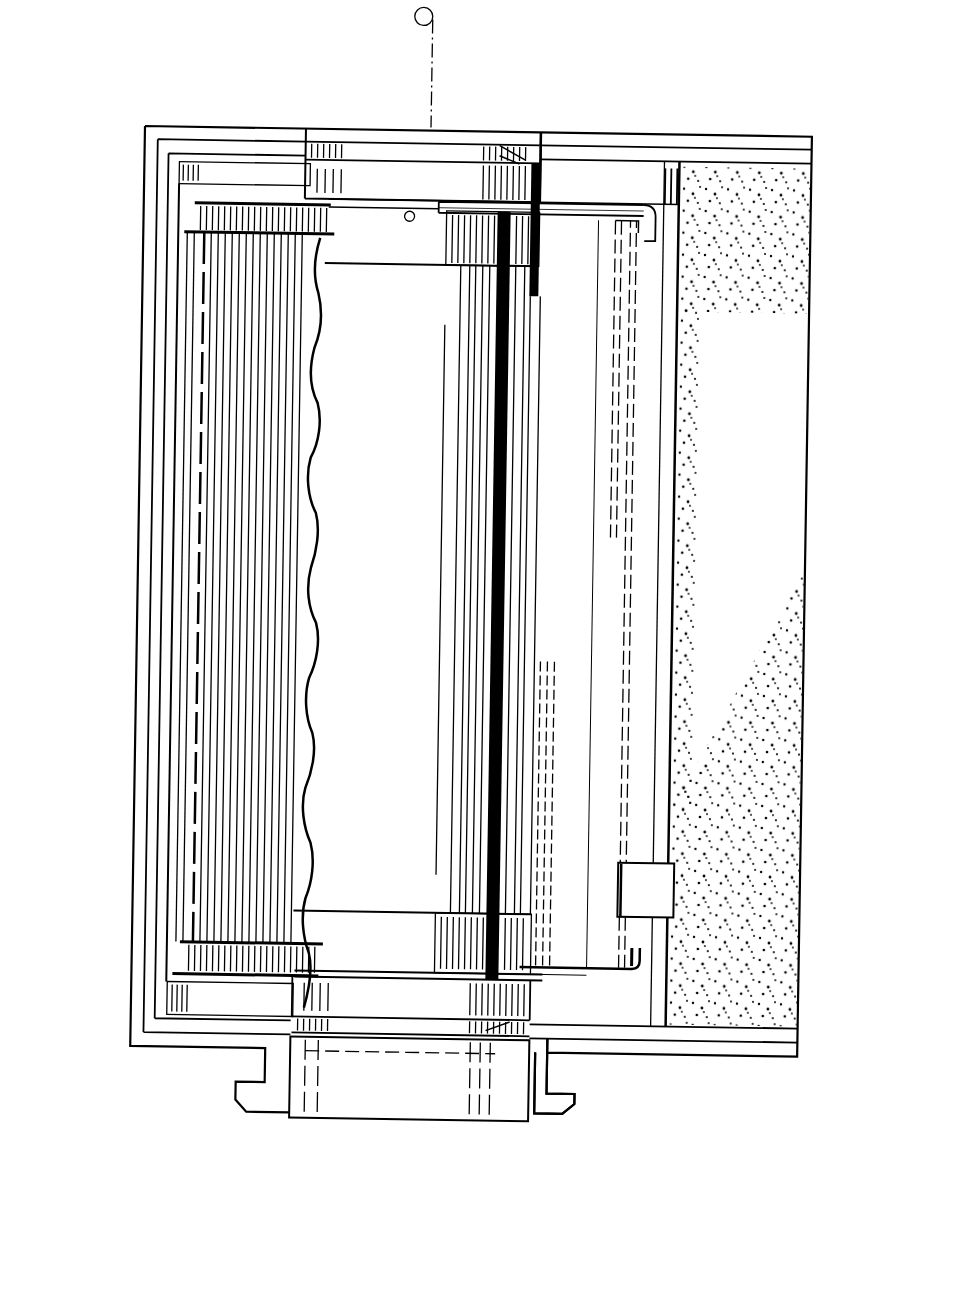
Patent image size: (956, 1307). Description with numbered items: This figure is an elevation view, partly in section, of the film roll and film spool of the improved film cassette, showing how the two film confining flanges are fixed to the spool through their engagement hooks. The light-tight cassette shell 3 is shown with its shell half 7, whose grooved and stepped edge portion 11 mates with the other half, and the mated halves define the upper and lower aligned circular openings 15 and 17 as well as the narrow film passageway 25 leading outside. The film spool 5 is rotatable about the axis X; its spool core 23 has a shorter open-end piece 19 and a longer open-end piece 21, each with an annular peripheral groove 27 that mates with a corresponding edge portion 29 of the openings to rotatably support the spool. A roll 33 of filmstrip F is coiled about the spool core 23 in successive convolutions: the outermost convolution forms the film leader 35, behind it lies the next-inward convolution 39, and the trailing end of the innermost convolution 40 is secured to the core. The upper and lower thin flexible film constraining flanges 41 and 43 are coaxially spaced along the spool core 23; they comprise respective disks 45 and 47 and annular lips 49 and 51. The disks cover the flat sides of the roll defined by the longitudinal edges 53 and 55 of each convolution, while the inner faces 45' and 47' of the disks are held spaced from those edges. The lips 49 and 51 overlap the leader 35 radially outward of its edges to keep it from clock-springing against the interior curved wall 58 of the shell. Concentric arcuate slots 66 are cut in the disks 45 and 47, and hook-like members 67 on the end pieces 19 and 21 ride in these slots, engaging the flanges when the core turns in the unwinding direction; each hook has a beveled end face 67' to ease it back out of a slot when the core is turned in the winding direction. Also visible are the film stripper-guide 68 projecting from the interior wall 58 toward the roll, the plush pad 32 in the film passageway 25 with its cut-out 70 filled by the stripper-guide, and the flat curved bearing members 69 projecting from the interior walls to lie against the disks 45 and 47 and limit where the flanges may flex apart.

The light-tight cassette shell 3 is at (258, 118).
The film spool 5 is at (183, 530).
The shell half 7 is at (188, 126).
The grooved and stepped edge portion 11 is at (160, 314).
The upper circular opening 15 is at (524, 128).
The lower circular opening 17 is at (522, 1072).
The shorter open-end piece 19 is at (340, 128).
The longer open-end piece 21 is at (328, 1100).
The spool core 23 is at (540, 597).
The film passageway 25 is at (770, 342).
The annular peripheral groove 27 is at (412, 147).
The edge portion of opening 29 is at (510, 152).
The plush pad 32 is at (785, 212).
The film roll 33 is at (183, 462).
The film leader 35 is at (640, 428).
The next-inward convolution 39 is at (640, 472).
The innermost convolution 40 is at (555, 685).
The upper film constraining flange 41 is at (186, 211).
The lower film constraining flange 43 is at (182, 958).
The disk 45 is at (543, 149).
The inner face of disk 45' is at (542, 154).
The disk 47 is at (578, 1024).
The inner face of disk 47' is at (588, 999).
The annular lip 49 is at (648, 215).
The annular lip 51 is at (642, 956).
The longitudinal edge 53 is at (590, 224).
The longitudinal edge 55 is at (566, 966).
The interior curved wall 58 is at (182, 380).
The concentric arcuate slot 66 is at (455, 226).
The hook-like member 67 is at (418, 592).
The beveled end face 67' is at (487, 590).
The film stripper-guide 68 is at (618, 887).
The flat curved bearing member 69 is at (170, 178).
The cut-out 70 is at (672, 878).
The filmstrip F is at (215, 580).
The axis X is at (448, 4).